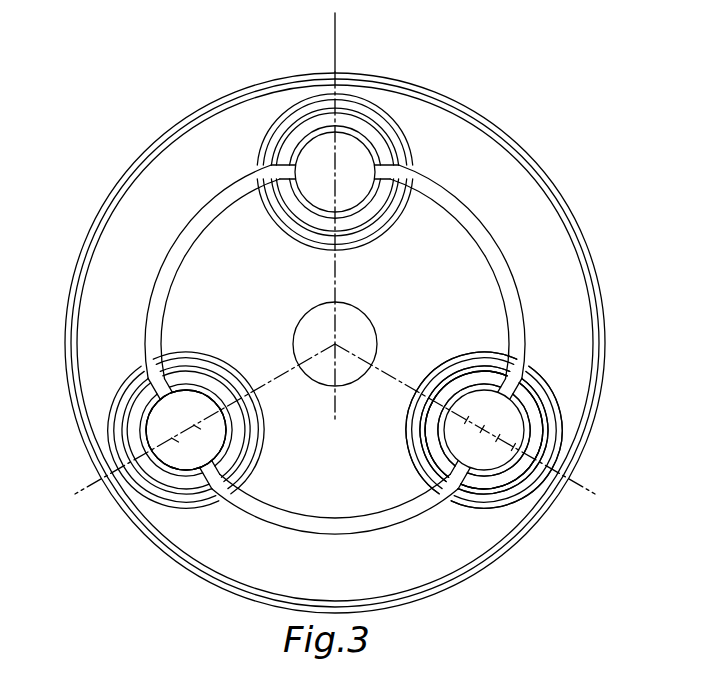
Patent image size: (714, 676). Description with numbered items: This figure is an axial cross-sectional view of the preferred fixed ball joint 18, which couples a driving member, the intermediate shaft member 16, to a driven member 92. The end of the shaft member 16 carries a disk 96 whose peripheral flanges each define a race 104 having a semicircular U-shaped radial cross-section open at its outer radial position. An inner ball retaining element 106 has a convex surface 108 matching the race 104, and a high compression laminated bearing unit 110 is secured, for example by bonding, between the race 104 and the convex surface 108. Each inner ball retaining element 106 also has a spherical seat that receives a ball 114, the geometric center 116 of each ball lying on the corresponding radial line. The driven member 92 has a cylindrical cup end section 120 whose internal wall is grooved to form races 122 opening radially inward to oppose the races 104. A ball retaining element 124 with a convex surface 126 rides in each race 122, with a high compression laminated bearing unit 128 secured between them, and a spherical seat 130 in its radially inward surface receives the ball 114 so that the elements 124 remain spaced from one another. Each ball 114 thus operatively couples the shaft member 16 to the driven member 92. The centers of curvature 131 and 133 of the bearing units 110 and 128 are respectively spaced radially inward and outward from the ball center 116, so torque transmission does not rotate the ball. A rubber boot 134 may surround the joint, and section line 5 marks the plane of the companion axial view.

The section line 5- 5 is at (300, 36).
The intermediate shaft member 16 is at (331, 349).
The fixed ball joint 18 is at (357, 343).
The driven member 92 is at (582, 327).
The disk 96 is at (495, 290).
The race 104 is at (437, 378).
The inner ball retaining element 106 is at (458, 385).
The convex surface 108 is at (432, 433).
The high compression laminated bearing unit 110 is at (202, 373).
The ball 114 is at (313, 154).
The geometric center 116 is at (160, 413).
The cylindrical cup end section 120 is at (518, 160).
The race 122 is at (534, 480).
The ball retaining element 124 is at (528, 410).
The convex surface 126 is at (540, 412).
The high compression laminated bearing unit 128 is at (487, 495).
The spherical seat 130 is at (523, 432).
The center of curvature 131 is at (222, 424).
The center of curvature 133 is at (185, 443).
The rubber boot 134 is at (466, 104).